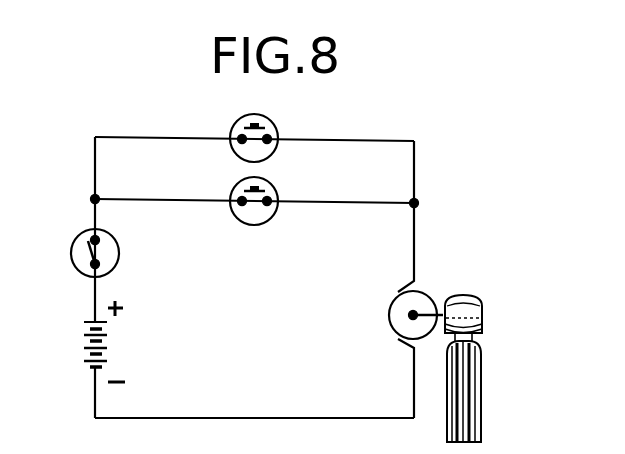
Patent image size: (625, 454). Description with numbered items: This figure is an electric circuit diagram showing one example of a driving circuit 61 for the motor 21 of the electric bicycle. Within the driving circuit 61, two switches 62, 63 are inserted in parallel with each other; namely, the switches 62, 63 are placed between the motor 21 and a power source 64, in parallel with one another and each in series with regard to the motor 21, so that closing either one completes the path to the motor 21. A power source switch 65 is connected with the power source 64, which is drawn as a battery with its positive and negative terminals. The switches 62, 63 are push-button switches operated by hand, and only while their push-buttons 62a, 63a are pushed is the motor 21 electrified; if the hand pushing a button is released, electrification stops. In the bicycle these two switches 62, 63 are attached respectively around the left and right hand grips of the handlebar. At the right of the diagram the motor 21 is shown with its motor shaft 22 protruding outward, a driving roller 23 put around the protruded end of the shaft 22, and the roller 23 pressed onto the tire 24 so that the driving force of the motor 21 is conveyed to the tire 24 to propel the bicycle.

The motor 21 is at (390, 321).
The motor shaft 22 is at (438, 311).
The driving roller 23 is at (477, 310).
The tire 24 is at (469, 373).
The driving circuit 61 is at (373, 138).
The switch 62 is at (236, 122).
The push-button 62a is at (271, 123).
The switch 63 is at (236, 185).
The push-button 63a is at (271, 186).
The power source 64 is at (84, 322).
The power source switch 65 is at (71, 254).